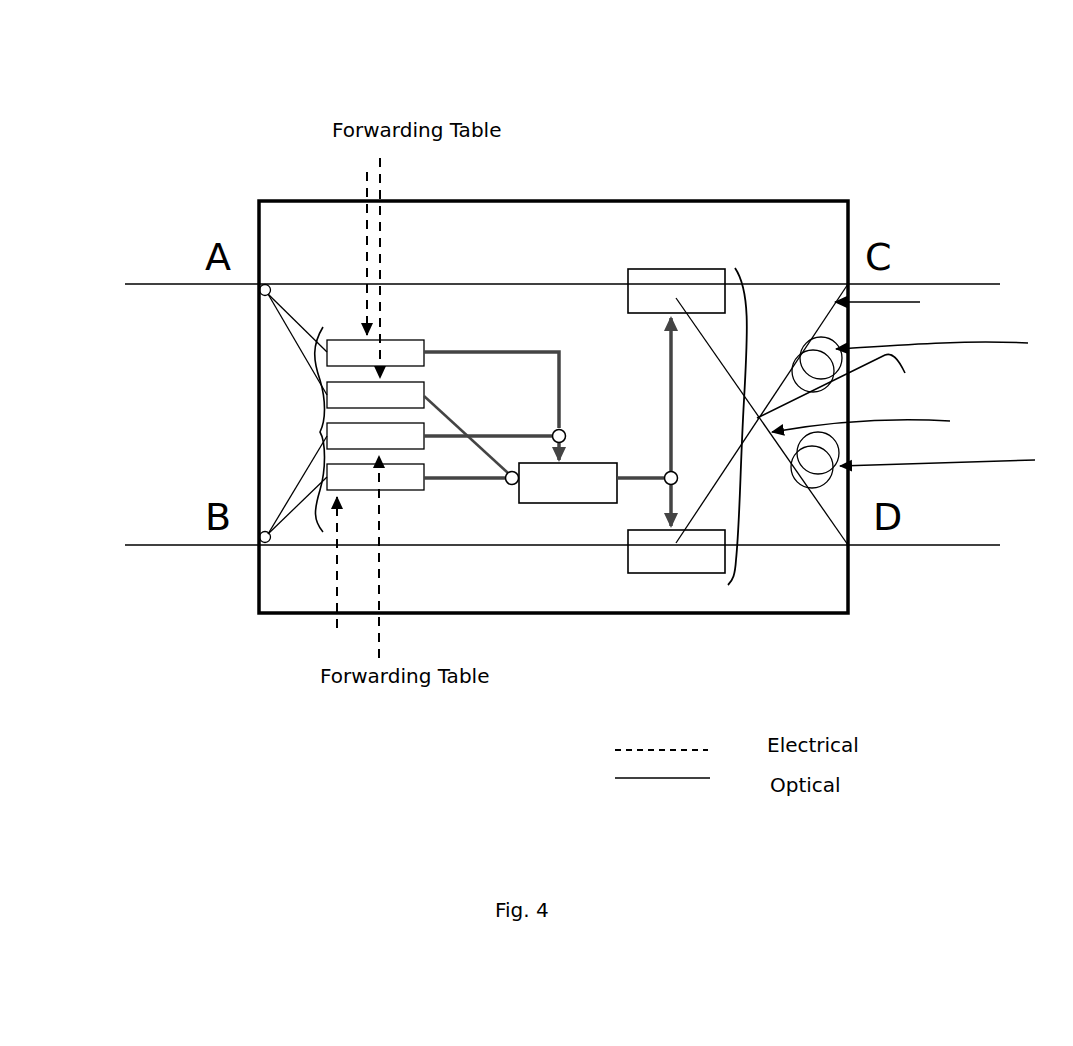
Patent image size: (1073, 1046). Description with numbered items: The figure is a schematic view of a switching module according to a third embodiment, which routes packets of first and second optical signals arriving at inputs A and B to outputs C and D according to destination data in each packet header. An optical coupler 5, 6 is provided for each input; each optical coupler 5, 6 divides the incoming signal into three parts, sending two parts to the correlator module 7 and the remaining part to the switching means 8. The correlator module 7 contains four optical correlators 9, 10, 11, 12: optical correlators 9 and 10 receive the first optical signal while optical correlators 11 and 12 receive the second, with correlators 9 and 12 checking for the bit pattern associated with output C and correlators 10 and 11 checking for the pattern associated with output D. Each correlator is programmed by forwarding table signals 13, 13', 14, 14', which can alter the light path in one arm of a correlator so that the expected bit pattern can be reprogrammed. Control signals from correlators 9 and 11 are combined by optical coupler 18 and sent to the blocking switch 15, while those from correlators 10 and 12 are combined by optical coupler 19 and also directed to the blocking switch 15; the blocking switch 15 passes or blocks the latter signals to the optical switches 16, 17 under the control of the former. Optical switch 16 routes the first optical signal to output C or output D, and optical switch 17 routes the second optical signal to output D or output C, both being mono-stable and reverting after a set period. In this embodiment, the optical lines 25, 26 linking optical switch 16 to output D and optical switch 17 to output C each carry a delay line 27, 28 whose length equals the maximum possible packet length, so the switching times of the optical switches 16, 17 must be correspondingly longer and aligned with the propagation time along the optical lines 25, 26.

The optical coupler 5 is at (270, 283).
The optical coupler 6 is at (270, 548).
The correlator module 7 is at (320, 432).
The switching means 8 is at (834, 412).
The optical correlator 9 is at (423, 338).
The optical correlator 10 is at (428, 386).
The optical correlator 11 is at (428, 437).
The optical correlator 12 is at (430, 487).
The forwarding table signal 13 is at (322, 183).
The forwarding table signal 13' is at (421, 202).
The forwarding table signal 14 is at (335, 574).
The forwarding table signal 14' is at (415, 635).
The blocking switch 15 is at (588, 508).
The optical switch 16 is at (676, 264).
The optical switch 17 is at (692, 578).
The optical coupler 18 is at (568, 432).
The optical coupler 19 is at (510, 470).
The optical line 25 is at (920, 302).
The optical line 26 is at (873, 421).
The delay line 27 is at (948, 345).
The delay line 28 is at (956, 459).